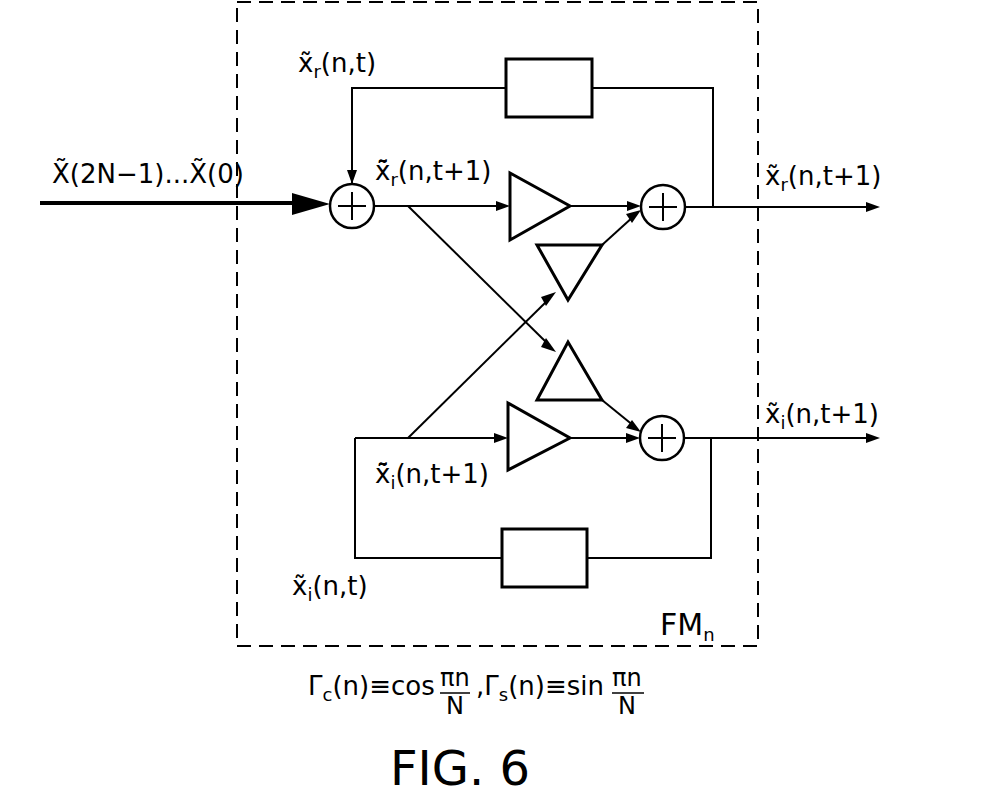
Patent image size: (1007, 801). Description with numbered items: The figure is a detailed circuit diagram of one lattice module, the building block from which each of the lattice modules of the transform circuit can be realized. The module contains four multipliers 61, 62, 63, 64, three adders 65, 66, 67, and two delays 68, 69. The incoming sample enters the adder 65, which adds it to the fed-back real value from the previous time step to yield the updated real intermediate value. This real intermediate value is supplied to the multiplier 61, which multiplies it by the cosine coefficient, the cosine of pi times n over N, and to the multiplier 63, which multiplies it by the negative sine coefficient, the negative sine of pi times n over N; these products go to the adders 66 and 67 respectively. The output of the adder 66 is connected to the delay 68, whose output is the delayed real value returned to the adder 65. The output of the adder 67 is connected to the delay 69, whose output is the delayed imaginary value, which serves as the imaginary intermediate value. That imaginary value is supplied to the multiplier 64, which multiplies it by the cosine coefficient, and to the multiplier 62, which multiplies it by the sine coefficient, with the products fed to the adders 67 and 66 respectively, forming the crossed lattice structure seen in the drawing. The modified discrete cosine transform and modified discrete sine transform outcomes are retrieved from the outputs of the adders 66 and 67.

The multiplier 61 is at (510, 230).
The multiplier 62 is at (537, 262).
The multiplier 63 is at (537, 385).
The multiplier 64 is at (508, 418).
The adder 65 is at (352, 228).
The adder 66 is at (663, 185).
The adder 67 is at (662, 460).
The delay 68 is at (533, 59).
The delay 69 is at (530, 587).